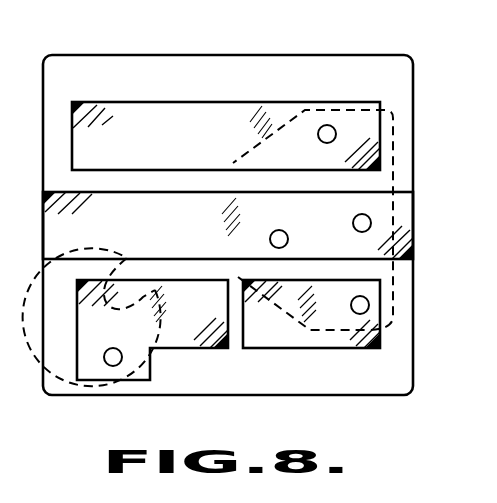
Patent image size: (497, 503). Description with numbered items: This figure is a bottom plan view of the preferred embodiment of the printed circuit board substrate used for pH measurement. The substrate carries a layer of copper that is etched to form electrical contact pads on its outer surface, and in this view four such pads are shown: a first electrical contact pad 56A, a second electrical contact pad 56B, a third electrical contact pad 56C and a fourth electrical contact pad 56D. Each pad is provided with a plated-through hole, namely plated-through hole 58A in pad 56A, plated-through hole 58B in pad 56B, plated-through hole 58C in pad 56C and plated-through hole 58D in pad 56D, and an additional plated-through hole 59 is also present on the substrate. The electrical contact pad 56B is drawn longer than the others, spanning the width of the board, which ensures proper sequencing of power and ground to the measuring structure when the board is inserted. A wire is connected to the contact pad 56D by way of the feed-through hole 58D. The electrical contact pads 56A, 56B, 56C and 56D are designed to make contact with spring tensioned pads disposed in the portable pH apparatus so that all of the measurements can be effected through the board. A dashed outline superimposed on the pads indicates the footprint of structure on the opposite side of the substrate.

The electrical contact pad 56A is at (258, 112).
The plated-through hole 58A is at (336, 131).
The electrical contact pad 56B is at (395, 247).
The plated-through hole 58B is at (371, 220).
The plated-through hole 59 is at (285, 233).
The electrical contact pad 56C is at (307, 348).
The plated-through hole 58C is at (369, 306).
The electrical contact pad 56D is at (190, 348).
The plated-through hole 58D is at (110, 366).